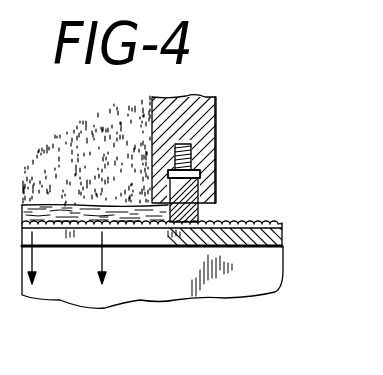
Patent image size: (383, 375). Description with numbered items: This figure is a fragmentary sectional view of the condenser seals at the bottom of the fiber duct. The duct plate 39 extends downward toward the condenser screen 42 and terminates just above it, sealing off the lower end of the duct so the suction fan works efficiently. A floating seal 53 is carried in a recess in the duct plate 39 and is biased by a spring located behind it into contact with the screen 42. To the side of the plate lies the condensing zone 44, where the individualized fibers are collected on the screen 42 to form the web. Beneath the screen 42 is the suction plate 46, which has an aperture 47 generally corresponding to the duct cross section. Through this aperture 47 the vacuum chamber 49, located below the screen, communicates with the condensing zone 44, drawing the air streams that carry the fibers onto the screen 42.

The duct plate 39 is at (205, 97).
The condenser screen 42 is at (268, 223).
The condensing zone 44 is at (72, 161).
The suction plate 46 is at (283, 237).
The aperture 47 is at (161, 247).
The vacuum chamber 49 is at (168, 297).
The floating seal 53 is at (199, 212).